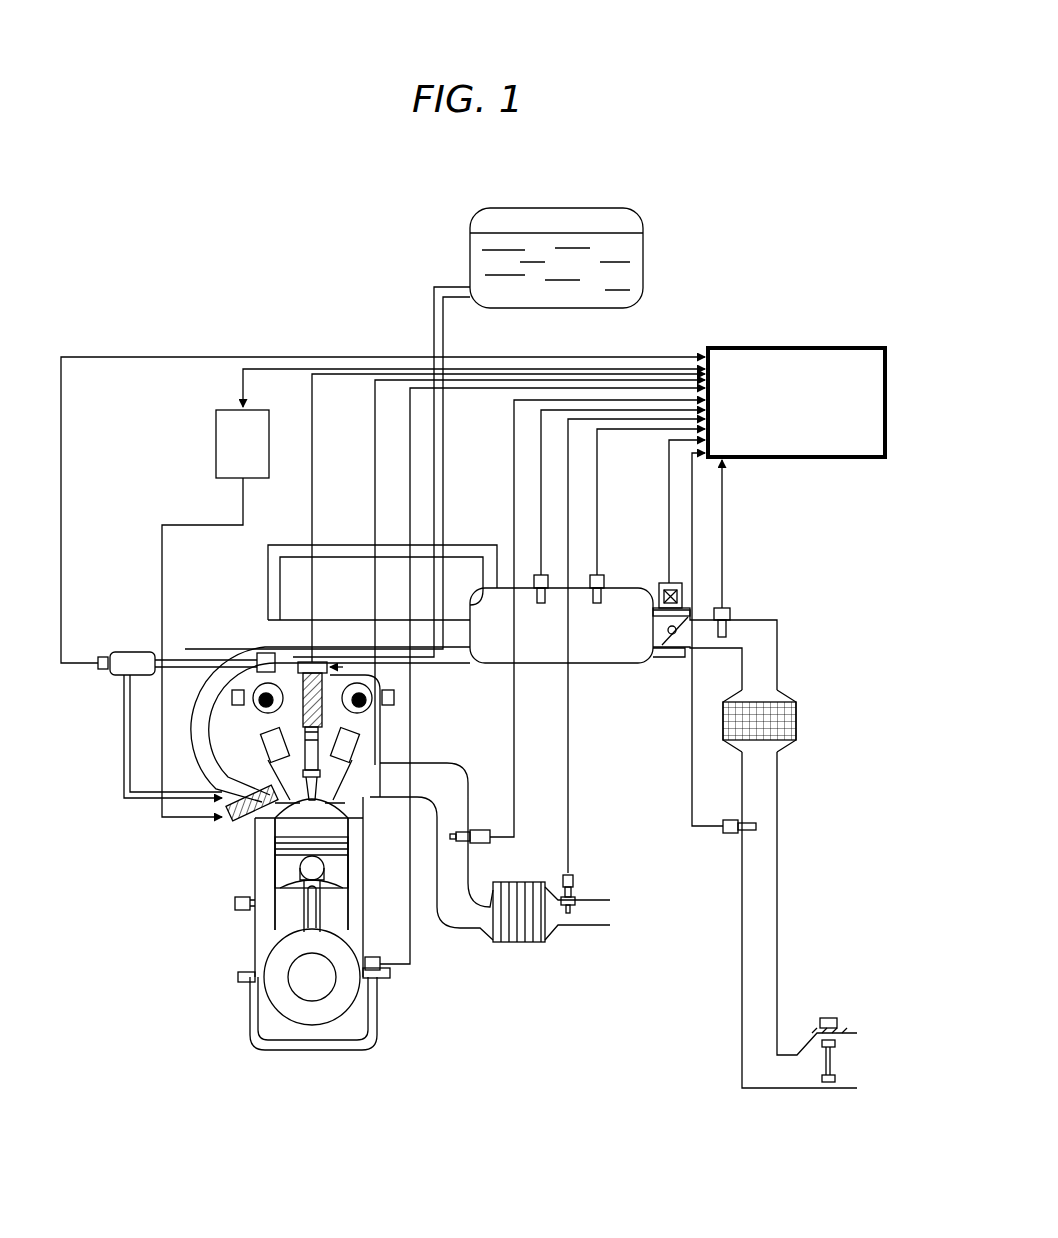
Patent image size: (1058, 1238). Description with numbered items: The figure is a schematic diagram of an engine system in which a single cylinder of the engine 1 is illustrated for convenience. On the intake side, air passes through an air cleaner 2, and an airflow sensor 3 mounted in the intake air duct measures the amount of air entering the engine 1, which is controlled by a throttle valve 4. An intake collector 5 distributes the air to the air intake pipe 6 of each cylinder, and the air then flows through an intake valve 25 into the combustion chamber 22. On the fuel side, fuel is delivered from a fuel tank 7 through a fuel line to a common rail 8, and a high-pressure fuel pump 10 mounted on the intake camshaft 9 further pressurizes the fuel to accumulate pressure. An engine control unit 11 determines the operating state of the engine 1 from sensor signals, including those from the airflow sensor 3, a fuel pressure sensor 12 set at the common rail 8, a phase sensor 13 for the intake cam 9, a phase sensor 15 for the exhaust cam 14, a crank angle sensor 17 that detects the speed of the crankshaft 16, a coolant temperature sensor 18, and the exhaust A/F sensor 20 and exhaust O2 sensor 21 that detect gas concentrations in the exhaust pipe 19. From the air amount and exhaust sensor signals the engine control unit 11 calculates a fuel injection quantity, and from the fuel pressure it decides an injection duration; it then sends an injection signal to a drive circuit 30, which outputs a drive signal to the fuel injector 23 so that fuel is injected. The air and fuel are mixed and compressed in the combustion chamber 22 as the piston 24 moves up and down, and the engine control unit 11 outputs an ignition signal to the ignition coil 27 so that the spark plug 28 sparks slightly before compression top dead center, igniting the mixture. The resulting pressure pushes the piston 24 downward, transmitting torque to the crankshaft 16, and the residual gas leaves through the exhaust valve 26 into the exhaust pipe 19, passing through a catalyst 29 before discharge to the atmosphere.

The engine 1 is at (257, 933).
The air cleaner 2 is at (797, 718).
The airflow sensor 3 is at (732, 612).
The throttle valve 4 is at (662, 584).
The intake collector 5 is at (606, 665).
The air intake pipe 6 is at (195, 730).
The fuel tank 7 is at (643, 250).
The common rail 8 is at (130, 650).
The intake camshaft 9 is at (255, 712).
The high-pressure fuel pump 10 is at (257, 660).
The engine control unit 11 is at (800, 346).
The fuel pressure sensor 12 is at (102, 655).
The phase sensor 13 is at (232, 698).
The exhaust cam 14 is at (355, 718).
The phase sensor 15 is at (395, 697).
The crankshaft 16 is at (312, 990).
The crank angle sensor 17 is at (385, 972).
The coolant temperature sensor 18 is at (235, 903).
The exhaust pipe 19 is at (455, 782).
The exhaust A/F sensor 20 is at (488, 845).
The exhaust O2 sensor 21 is at (575, 880).
The combustion chamber 22 is at (290, 830).
The fuel injector 23 is at (225, 808).
The piston 24 is at (287, 865).
The intake valve 25 is at (265, 795).
The exhaust valve 26 is at (352, 822).
The ignition coil 27 is at (310, 662).
The spark plug 28 is at (313, 762).
The catalyst 29 is at (526, 945).
The drive circuit 30 is at (216, 445).